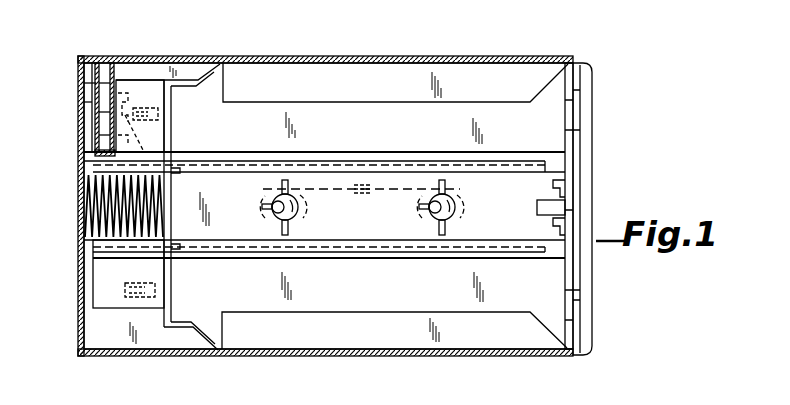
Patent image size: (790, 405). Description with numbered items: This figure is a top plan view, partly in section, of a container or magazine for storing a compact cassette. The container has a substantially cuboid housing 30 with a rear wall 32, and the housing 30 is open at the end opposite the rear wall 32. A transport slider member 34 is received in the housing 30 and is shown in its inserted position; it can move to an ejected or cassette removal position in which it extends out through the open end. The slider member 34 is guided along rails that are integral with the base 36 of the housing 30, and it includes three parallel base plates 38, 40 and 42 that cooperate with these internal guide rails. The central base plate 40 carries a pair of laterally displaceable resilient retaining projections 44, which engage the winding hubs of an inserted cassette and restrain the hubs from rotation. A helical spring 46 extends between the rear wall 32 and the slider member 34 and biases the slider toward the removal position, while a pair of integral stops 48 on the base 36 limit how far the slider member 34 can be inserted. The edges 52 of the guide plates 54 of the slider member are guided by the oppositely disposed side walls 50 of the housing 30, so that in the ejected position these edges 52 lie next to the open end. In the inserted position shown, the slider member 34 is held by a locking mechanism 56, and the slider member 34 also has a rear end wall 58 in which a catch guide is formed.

The housing 30 is at (85, 56).
The rear wall 32 is at (80, 121).
The transport slider member 34 is at (313, 100).
The base 36 is at (475, 82).
The base plate 38 is at (324, 146).
The central base plate 40 is at (361, 204).
The base plate 42 is at (324, 267).
The resilient retaining projections 44 is at (299, 206).
The helical spring 46 is at (84, 205).
The integral stops 48 is at (158, 113).
The side walls 50 is at (367, 57).
The edges 52 is at (221, 64).
The guide plates 54 is at (210, 82).
The locking mechanism 56 is at (140, 96).
The rear end wall 58 is at (116, 70).